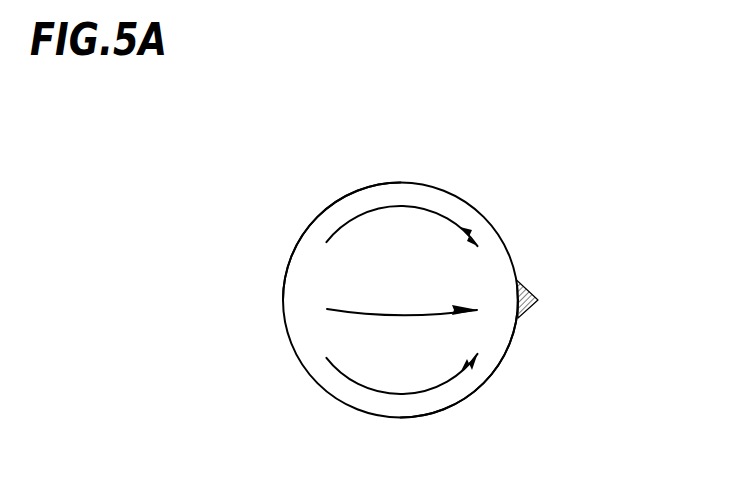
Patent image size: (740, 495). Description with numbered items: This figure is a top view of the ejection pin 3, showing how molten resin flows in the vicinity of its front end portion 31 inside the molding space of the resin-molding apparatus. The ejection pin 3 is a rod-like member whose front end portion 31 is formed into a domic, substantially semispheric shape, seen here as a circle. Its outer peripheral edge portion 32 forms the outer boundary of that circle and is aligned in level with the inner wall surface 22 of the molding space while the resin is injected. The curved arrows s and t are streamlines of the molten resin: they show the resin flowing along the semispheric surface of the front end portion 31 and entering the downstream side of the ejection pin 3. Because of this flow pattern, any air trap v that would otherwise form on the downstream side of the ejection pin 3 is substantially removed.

The ejection pin 3 is at (476, 208).
The front end portion 31 is at (300, 278).
The outer peripheral edge portion 32 is at (495, 370).
The inner wall surface 22 is at (603, 345).
The air trap v is at (527, 288).
The curved arrow (streamline) s is at (347, 222).
The curved arrow (streamline) t is at (380, 313).